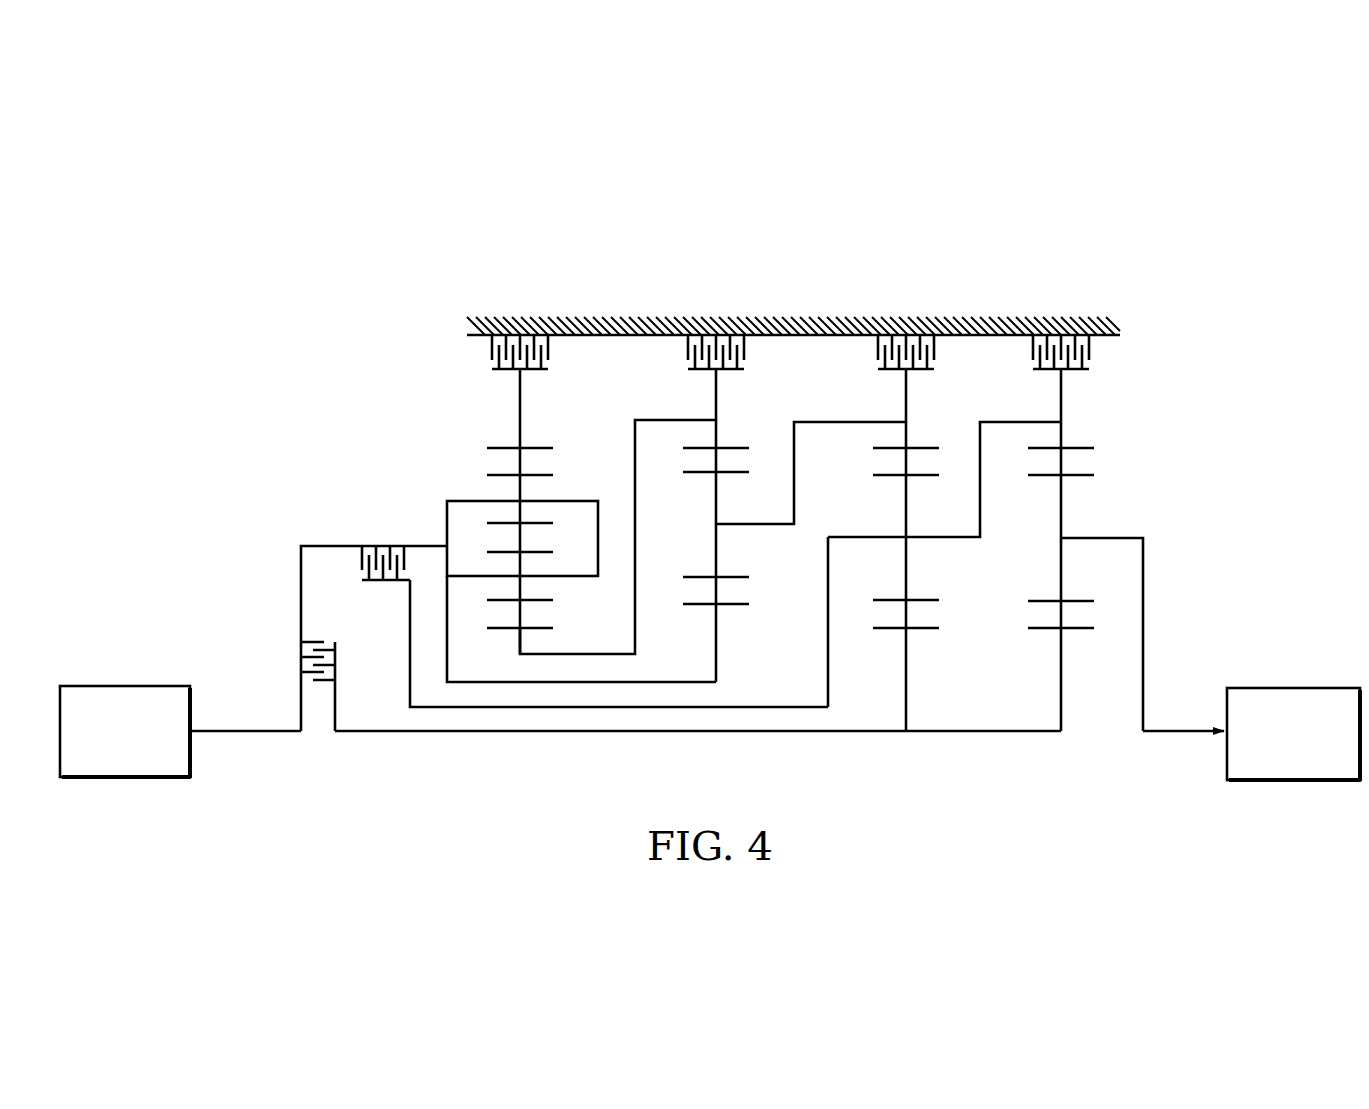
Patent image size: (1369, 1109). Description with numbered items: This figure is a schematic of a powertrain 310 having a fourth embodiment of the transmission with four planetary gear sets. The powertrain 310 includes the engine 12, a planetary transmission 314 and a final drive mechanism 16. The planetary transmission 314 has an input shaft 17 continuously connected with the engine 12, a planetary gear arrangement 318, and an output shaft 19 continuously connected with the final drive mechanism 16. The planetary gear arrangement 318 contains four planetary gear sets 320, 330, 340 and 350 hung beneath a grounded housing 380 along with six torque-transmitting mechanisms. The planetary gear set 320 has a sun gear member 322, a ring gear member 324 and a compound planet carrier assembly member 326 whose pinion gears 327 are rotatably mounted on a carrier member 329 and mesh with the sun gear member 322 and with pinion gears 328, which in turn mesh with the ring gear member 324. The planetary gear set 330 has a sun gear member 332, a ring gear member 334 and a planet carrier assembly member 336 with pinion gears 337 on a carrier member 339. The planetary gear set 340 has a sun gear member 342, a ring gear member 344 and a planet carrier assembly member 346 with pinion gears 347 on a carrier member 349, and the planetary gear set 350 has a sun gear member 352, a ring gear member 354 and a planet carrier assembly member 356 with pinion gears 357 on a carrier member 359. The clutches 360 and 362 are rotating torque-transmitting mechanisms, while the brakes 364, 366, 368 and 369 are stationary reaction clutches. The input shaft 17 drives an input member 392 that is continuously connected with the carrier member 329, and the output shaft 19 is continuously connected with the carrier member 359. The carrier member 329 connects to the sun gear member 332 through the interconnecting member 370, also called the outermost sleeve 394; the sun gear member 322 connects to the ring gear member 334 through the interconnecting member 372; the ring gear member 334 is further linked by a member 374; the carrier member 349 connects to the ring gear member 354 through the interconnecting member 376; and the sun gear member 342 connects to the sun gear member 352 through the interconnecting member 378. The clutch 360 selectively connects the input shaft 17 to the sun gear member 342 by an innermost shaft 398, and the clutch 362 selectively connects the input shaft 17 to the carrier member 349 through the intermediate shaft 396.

The engine 12 is at (133, 672).
The final drive mechanism 16 is at (1283, 672).
The input shaft 17 is at (245, 733).
The output shaft 19 is at (1183, 733).
The powertrain 310 is at (372, 455).
The planetary transmission 314 is at (420, 413).
The planetary gear arrangement 318 is at (470, 393).
The planetary gear set 320 is at (534, 645).
The sun gear member 322 is at (543, 632).
The ring gear member 324 is at (543, 445).
The planet carrier assembly member 326 is at (467, 490).
The pinion gears 327 is at (530, 588).
The pinion gears 328 is at (530, 490).
The carrier member 329 is at (600, 508).
The planetary gear set 330 is at (729, 612).
The sun gear member 332 is at (745, 608).
The ring gear member 334 is at (736, 445).
The planet carrier assembly member 336 is at (700, 508).
The pinion gears 337 is at (718, 556).
The carrier member 339 is at (760, 522).
The planetary gear set 340 is at (923, 636).
The sun gear member 342 is at (945, 632).
The ring gear member 344 is at (922, 446).
The planet carrier assembly member 346 is at (870, 515).
The pinion gears 347 is at (910, 580).
The carrier member 349 is at (938, 537).
The planetary gear set 350 is at (1079, 640).
The sun gear member 352 is at (1045, 632).
The ring gear member 354 is at (1078, 446).
The planet carrier assembly member 356 is at (1050, 525).
The pinion gears 357 is at (1063, 578).
The carrier member 359 is at (1112, 537).
The clutch 360 is at (320, 632).
The clutch 362 is at (348, 565).
The brake 364 is at (682, 354).
The brake 366 is at (946, 354).
The brake 368 is at (1097, 354).
The brake 369 is at (558, 354).
The interconnecting member 370 is at (690, 684).
The interconnecting member 372 is at (650, 420).
The interconnecting member 374 is at (815, 420).
The interconnecting member 376 is at (1000, 420).
The interconnecting member 378 is at (1012, 733).
The transmission housing / ground 380 is at (862, 320).
The input member 392 is at (302, 546).
The outermost sleeve 394 is at (485, 684).
The intermediate shaft 396 is at (430, 708).
The innermost shaft 398 is at (633, 733).